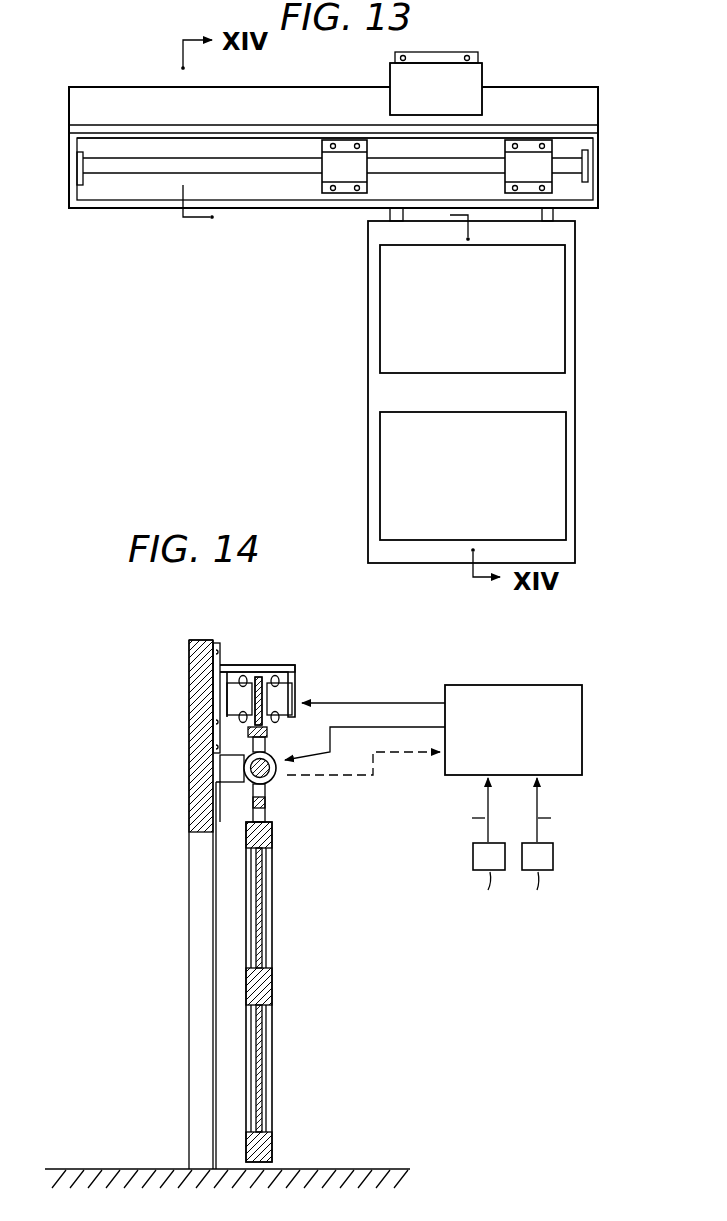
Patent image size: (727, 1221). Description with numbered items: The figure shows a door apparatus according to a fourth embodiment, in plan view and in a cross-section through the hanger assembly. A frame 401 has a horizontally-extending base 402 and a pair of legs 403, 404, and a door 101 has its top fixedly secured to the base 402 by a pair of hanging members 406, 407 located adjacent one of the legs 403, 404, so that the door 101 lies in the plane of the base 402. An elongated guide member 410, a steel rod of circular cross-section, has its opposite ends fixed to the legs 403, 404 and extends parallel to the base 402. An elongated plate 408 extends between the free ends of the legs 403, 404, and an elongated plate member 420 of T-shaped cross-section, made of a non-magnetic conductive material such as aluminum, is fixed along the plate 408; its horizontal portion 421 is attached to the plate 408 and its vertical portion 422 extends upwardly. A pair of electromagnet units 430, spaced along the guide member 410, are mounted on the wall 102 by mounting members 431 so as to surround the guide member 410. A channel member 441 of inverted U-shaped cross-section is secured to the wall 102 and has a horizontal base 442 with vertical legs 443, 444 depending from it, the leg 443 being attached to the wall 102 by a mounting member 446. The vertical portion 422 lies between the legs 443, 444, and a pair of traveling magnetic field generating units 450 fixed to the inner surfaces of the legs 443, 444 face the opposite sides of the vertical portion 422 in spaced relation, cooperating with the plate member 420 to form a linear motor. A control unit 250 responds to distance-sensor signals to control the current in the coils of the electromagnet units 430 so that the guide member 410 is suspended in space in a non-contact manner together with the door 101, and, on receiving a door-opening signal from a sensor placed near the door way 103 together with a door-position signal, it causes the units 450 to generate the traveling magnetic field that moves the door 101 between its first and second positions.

In FIG. 13, the door 101 is at (577, 387).
In FIG. 14, the door 101 is at (273, 992).
In FIG. 14, the wall 102 is at (210, 793).
In FIG. 14, the door way 103 is at (203, 833).
In FIG. 14, the control unit 250 is at (487, 685).
In FIG. 13, the frame 401 is at (603, 147).
In FIG. 13, the base 402 is at (284, 210).
In FIG. 14, the base 402 is at (268, 806).
In FIG. 13, the leg 403 is at (75, 186).
In FIG. 13, the leg 404 is at (601, 182).
In FIG. 14, the leg 404 is at (268, 794).
In FIG. 13, the hanging member 406 is at (385, 213).
In FIG. 13, the hanging member 407 is at (560, 210).
In FIG. 13, the elongated plate 408 is at (224, 139).
In FIG. 14, the elongated plate 408 is at (222, 770).
In FIG. 13, the guide member 410 is at (222, 174).
In FIG. 14, the guide member 410 is at (263, 748).
In FIG. 13, the plate member 420 is at (603, 103).
In FIG. 14, the plate member 420 is at (268, 669).
In FIG. 14, the horizontal portion 421 is at (248, 731).
In FIG. 14, the vertical portion 422 is at (262, 702).
In FIG. 13, the electromagnet unit 430 is at (503, 147).
In FIG. 14, the electromagnet unit 430 is at (235, 802).
In FIG. 13, the mounting member 431 is at (338, 140).
In FIG. 14, the mounting member 431 is at (213, 781).
In FIG. 13, the channel member 441 is at (488, 70).
In FIG. 14, the channel member 441 is at (259, 672).
In FIG. 14, the base 442 is at (232, 665).
In FIG. 14, the leg 443 is at (220, 688).
In FIG. 13, the leg 444 is at (390, 83).
In FIG. 14, the leg 444 is at (298, 694).
In FIG. 13, the mounting member 446 is at (440, 52).
In FIG. 14, the mounting member 446 is at (216, 673).
In FIG. 14, the traveling magnetic field generating unit 450 is at (238, 697).